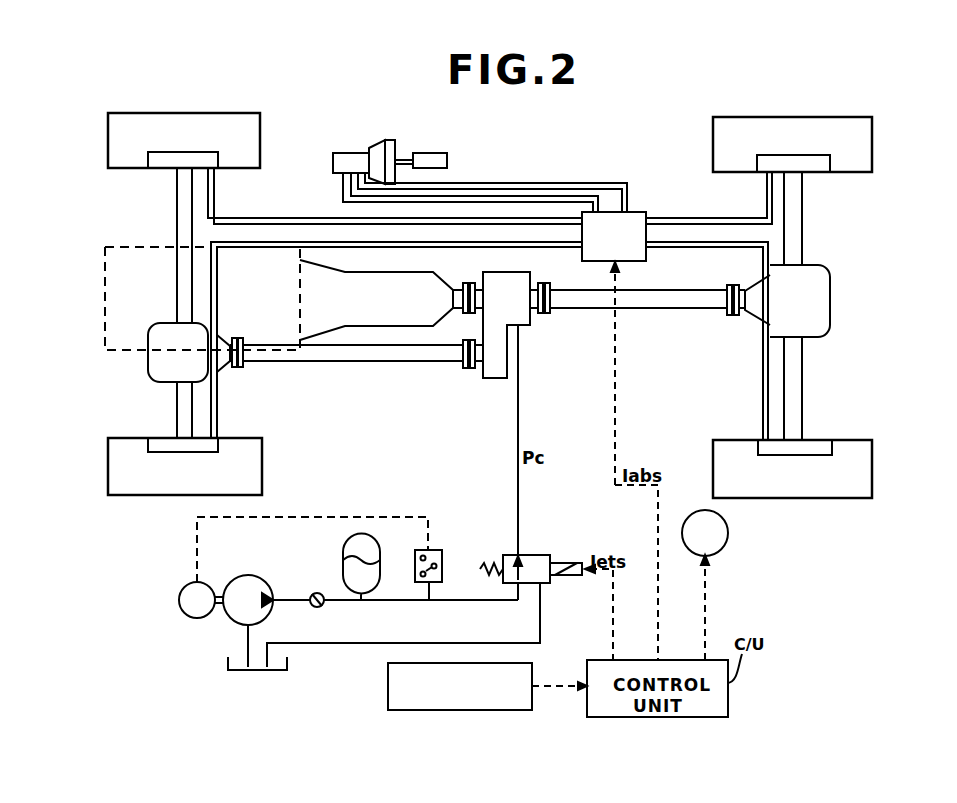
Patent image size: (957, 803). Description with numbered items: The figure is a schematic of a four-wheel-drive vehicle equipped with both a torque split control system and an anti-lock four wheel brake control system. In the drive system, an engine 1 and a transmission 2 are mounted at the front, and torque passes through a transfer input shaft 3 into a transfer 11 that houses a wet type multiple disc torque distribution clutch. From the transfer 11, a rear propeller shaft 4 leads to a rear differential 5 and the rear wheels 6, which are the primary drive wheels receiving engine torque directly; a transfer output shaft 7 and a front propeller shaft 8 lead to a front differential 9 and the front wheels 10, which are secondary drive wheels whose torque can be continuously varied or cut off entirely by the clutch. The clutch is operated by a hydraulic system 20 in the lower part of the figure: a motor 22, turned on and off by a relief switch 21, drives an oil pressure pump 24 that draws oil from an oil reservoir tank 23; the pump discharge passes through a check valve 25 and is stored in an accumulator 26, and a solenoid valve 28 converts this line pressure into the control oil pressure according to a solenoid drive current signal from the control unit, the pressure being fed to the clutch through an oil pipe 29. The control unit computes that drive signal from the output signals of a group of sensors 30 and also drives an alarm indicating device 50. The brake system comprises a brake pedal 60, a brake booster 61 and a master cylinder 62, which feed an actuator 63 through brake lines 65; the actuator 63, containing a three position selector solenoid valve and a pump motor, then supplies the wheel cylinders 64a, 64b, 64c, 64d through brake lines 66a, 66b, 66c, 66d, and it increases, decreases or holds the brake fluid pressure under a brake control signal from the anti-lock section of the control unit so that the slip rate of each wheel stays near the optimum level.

The engine 1 is at (202, 298).
The transmission 2 is at (381, 300).
The transfer input shaft 3 is at (480, 282).
The rear propeller shaft 4 is at (585, 310).
The rear differential 5 is at (820, 265).
The rear wheels 6 is at (872, 172).
The transfer output shaft 7 is at (472, 369).
The front propeller shaft 8 is at (380, 362).
The front differential 9 is at (148, 376).
The front wheels 10 is at (108, 170).
The transfer 11 is at (519, 325).
The hydraulic system 20 is at (394, 572).
The relief switch 21 is at (440, 550).
The motor 22 is at (178, 604).
The oil reservoir tank 23 is at (287, 664).
The oil pressure pump 24 is at (246, 575).
The check valve 25 is at (313, 592).
The accumulator 26 is at (378, 560).
The solenoid valve 28 is at (505, 555).
The oil pipe 29 is at (520, 394).
The sensors 30 is at (422, 710).
The alarm indicating device 50 is at (728, 533).
The brake pedal 60 is at (430, 153).
The brake booster 61 is at (390, 140).
The master cylinder 62 is at (348, 152).
The actuator 63 is at (646, 214).
The wheel cylinder 64a is at (218, 446).
The wheel cylinder 64b is at (218, 160).
The wheel cylinder 64c is at (832, 448).
The wheel cylinder 64d is at (830, 163).
The brake lines 65 is at (528, 187).
The brake line 66a is at (218, 402).
The brake line 66b is at (257, 219).
The brake line 66c is at (763, 374).
The brake line 66d is at (705, 219).